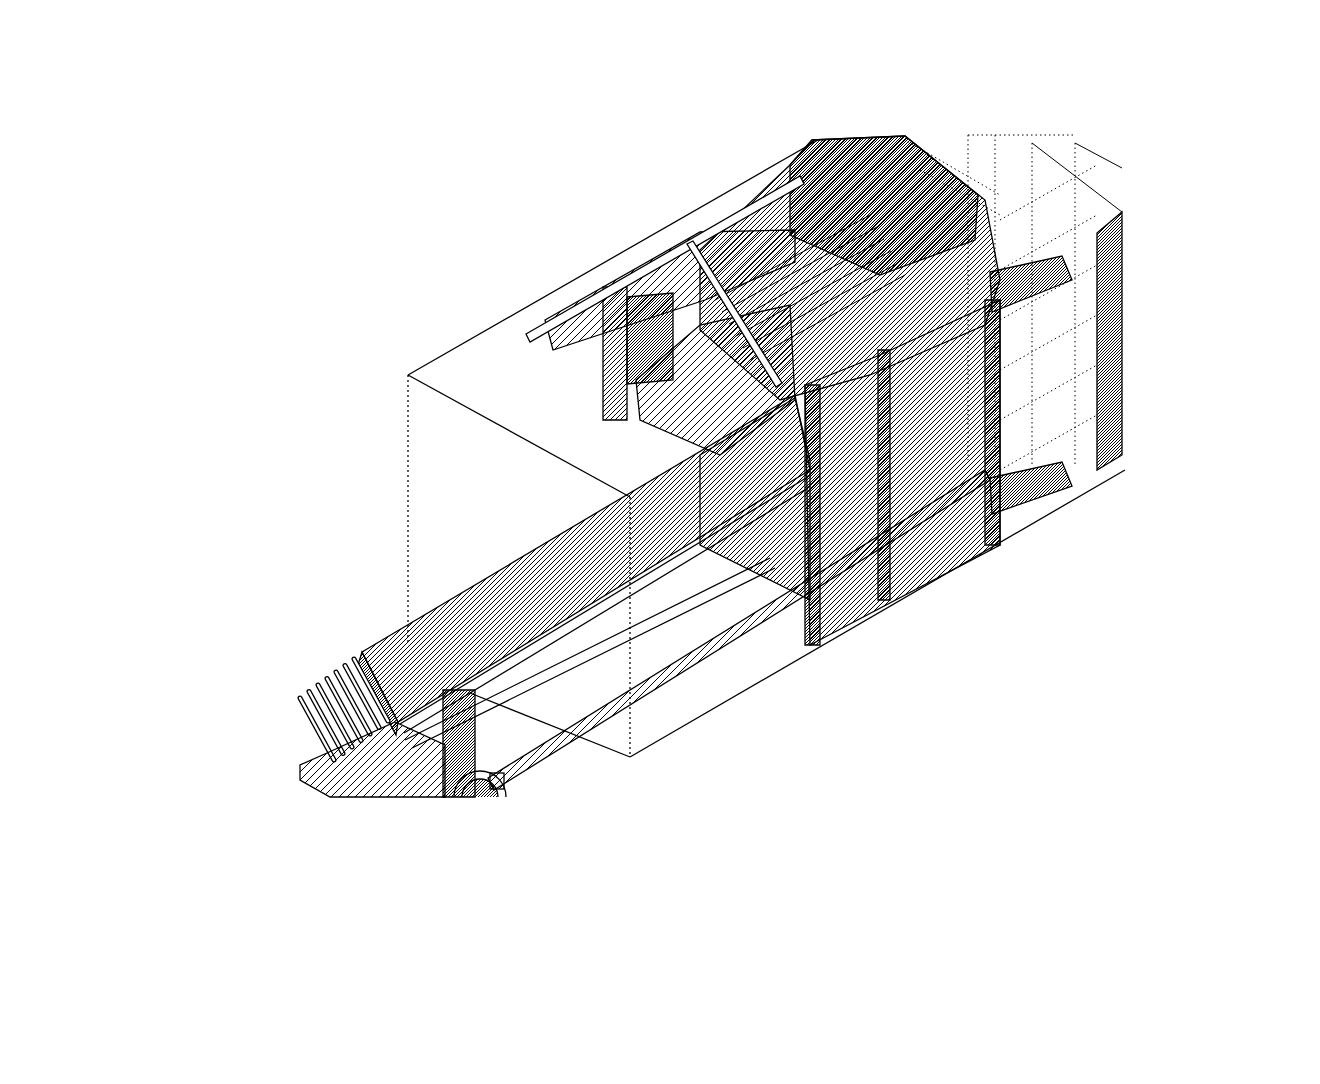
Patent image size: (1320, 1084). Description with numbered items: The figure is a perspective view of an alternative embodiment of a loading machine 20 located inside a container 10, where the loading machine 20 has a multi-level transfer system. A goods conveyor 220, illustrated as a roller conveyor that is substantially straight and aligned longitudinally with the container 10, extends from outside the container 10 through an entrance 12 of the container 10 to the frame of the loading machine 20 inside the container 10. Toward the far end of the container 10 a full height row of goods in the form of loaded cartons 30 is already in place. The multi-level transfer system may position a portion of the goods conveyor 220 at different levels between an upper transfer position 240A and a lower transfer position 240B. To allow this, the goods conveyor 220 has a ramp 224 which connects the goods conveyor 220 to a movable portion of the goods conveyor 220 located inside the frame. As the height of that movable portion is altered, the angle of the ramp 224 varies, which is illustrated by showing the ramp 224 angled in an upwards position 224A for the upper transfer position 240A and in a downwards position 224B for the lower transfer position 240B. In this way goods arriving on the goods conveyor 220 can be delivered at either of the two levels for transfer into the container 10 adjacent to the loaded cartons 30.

The loading machine 20 is at (508, 148).
The container 10 is at (453, 347).
The entrance 12 is at (405, 457).
The loaded cartons 30 is at (1085, 183).
The goods conveyor 220 is at (320, 718).
The ramp 224 is at (485, 588).
The upwards position 224A is at (485, 548).
The downwards position 224B is at (657, 622).
The upper transfer position 240A is at (1036, 303).
The lower transfer position 240B is at (1048, 497).